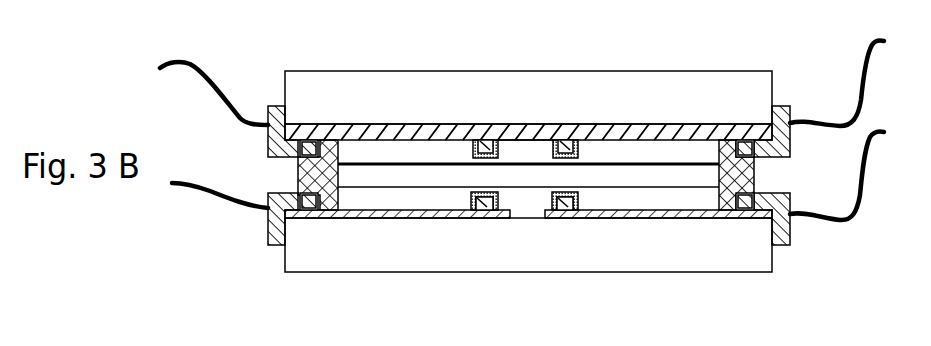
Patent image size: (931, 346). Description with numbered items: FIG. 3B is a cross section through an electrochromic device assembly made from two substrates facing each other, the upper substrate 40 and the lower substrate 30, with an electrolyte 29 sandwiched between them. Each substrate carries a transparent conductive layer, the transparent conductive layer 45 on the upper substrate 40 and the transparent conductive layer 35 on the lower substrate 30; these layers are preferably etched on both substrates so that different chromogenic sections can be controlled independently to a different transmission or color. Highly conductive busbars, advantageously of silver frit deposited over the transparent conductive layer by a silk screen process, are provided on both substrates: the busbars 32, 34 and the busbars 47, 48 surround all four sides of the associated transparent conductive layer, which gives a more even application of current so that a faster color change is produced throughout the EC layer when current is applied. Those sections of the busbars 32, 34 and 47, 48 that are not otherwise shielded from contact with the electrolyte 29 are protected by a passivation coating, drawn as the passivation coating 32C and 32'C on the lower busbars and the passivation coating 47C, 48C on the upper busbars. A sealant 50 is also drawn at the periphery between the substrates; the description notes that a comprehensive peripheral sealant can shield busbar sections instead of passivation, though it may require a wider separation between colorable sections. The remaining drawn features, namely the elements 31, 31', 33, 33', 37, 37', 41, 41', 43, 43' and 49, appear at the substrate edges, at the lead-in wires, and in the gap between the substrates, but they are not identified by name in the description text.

The electrolyte 29 is at (528, 176).
The lower substrate 30 is at (285, 272).
The lower electrode layer 31 is at (397, 257).
The lower electrode layer (right) 31' is at (685, 263).
The busbar 32 is at (343, 254).
The passivation coating 32C is at (499, 203).
The lower electrode contact (right) 32'C is at (617, 260).
The lower seal member 33 is at (238, 234).
The lower seal member (right) 33' is at (806, 225).
The busbar 34 is at (562, 205).
The transparent conductive layer 35 is at (437, 198).
The lower lead wire 37 is at (212, 174).
The lower lead wire (right) 37' is at (837, 176).
The upper substrate 40 is at (284, 71).
The upper lead wire 41 is at (209, 68).
The upper lead wire (right) 41' is at (837, 83).
The upper seal member 43 is at (255, 103).
The upper seal member (right) 43' is at (793, 123).
The transparent conductive layer 45 is at (368, 131).
The busbar 47 is at (298, 156).
The passivation coating 47C is at (470, 147).
The busbar 48 is at (553, 140).
The passivation coating 48C is at (587, 157).
The insulating gap 49 is at (537, 155).
The peripheral sealant 50 is at (285, 173).